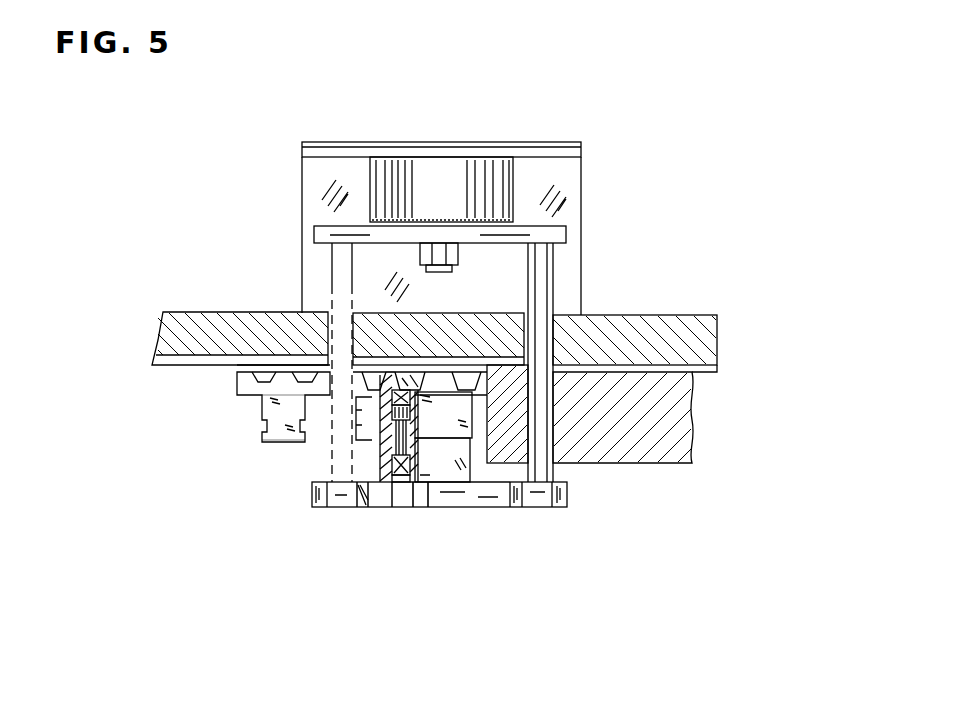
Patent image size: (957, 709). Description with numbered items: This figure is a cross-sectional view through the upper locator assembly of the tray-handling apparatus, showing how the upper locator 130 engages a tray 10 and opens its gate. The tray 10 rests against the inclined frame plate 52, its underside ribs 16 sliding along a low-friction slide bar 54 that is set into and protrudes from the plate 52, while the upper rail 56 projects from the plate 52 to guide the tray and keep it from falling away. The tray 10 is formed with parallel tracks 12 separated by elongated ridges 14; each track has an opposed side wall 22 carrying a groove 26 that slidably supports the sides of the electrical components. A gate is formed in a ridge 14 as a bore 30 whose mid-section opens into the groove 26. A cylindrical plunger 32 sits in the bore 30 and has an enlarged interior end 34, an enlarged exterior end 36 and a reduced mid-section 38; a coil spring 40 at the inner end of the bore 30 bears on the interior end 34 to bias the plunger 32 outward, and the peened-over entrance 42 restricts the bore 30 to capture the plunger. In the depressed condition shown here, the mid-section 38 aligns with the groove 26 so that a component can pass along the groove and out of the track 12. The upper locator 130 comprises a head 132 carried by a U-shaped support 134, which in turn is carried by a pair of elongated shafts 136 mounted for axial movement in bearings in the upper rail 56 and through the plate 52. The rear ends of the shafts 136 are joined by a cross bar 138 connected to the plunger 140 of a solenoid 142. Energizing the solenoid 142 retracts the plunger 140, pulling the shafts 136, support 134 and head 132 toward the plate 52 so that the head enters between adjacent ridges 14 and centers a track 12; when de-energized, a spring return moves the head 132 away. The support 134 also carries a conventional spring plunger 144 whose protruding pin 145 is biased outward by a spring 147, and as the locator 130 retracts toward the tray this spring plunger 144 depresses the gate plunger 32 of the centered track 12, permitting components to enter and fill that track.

The tray 10 is at (250, 437).
The track 12 is at (474, 404).
The ridge 14 is at (372, 447).
The rib 16 is at (383, 385).
The side wall 22 is at (475, 400).
The groove 26 is at (500, 430).
The bore 30 is at (393, 437).
The plunger 32 is at (390, 452).
The interior end 34 is at (397, 397).
The exterior end 36 is at (415, 442).
The mid-section 38 is at (406, 428).
The coil spring 40 is at (400, 390).
The entrance 42 is at (357, 507).
The frame plate 52 is at (655, 330).
The slide bar 54 is at (190, 368).
The upper rail 56 is at (678, 446).
The upper locator 130 is at (460, 527).
The head 132 is at (462, 472).
The support 134 is at (538, 508).
The shaft 136 is at (332, 263).
The cross bar 138 is at (325, 232).
The plunger 140 is at (447, 234).
The solenoid 142 is at (500, 170).
The spring plunger 144 is at (398, 507).
The pin 145 is at (430, 507).
The spring 147 is at (418, 507).